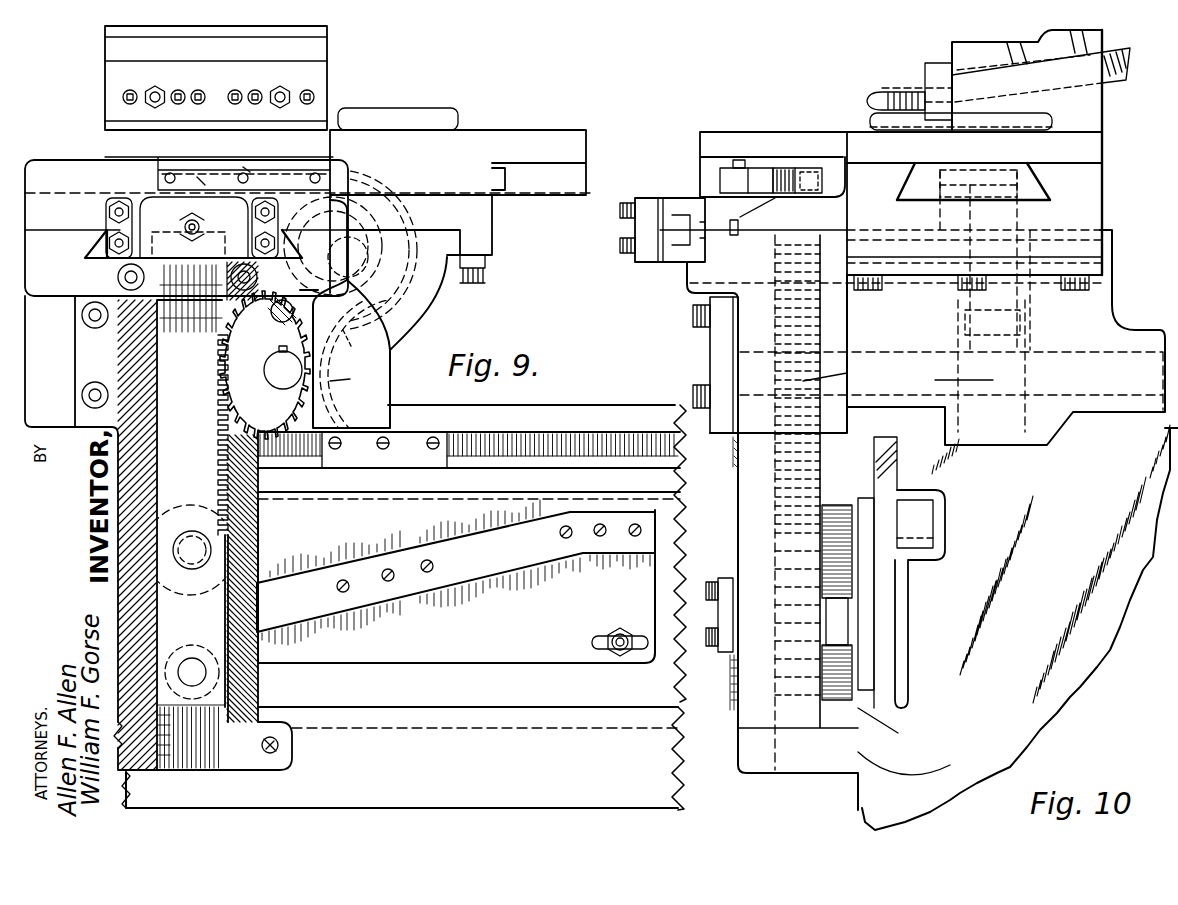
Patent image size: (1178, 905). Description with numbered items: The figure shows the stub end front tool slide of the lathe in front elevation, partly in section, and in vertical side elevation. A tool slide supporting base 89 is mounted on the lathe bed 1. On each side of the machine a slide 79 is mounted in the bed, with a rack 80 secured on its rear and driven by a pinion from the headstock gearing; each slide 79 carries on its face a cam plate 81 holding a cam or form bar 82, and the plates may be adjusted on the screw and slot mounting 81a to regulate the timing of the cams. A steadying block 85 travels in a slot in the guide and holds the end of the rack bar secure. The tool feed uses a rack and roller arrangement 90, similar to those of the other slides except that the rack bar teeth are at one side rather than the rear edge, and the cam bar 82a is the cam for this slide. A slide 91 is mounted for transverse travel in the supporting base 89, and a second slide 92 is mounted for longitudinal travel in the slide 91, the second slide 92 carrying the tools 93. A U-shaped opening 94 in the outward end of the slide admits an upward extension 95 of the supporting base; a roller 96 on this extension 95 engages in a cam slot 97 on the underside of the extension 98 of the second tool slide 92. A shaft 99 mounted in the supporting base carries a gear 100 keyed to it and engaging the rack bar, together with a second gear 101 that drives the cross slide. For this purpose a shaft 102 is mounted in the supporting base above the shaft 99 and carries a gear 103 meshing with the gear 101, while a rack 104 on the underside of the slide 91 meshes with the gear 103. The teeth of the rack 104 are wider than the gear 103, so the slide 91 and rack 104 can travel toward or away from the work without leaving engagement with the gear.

In FIG. 9, the lathe bed 1 is at (650, 697).
In FIG. 10, the lathe bed 1 is at (1058, 705).
In FIG. 9, the slide 79 is at (548, 712).
In FIG. 10, the slide 79 is at (892, 643).
In FIG. 9, the rack 80 is at (678, 522).
In FIG. 10, the rack 80 is at (936, 599).
In FIG. 9, the cam plate 81 is at (457, 652).
In FIG. 10, the cam plate 81 is at (863, 630).
In FIG. 9, the screw and slot mounting 81a is at (600, 650).
In FIG. 10, the cam or form bar 82 is at (838, 632).
In FIG. 9, the cam bar 82a is at (538, 552).
In FIG. 10, the steadying block 85 is at (720, 617).
In FIG. 9, the tool slide supporting base 89 is at (392, 385).
In FIG. 10, the tool slide supporting base 89 is at (932, 520).
In FIG. 9, the rack and roller arrangement 90 is at (260, 543).
In FIG. 9, the slide 91 is at (88, 242).
In FIG. 10, the slide 91 is at (1095, 205).
In FIG. 9, the second slide 92 is at (556, 140).
In FIG. 10, the second slide 92 is at (1077, 149).
In FIG. 9, the tools 93 is at (317, 96).
In FIG. 10, the tools 93 is at (1073, 80).
In FIG. 9, the U-shaped opening 94 is at (112, 266).
In FIG. 10, the U-shaped opening 94 is at (712, 217).
In FIG. 9, the upward extension 95 is at (157, 220).
In FIG. 10, the upward extension 95 is at (792, 213).
In FIG. 9, the roller 96 is at (197, 177).
In FIG. 10, the roller 96 is at (792, 177).
In FIG. 9, the cam slot 97 is at (247, 167).
In FIG. 10, the cam slot 97 is at (767, 177).
In FIG. 9, the extension 98 is at (118, 140).
In FIG. 10, the extension 98 is at (732, 138).
In FIG. 9, the shaft 99 is at (270, 384).
In FIG. 10, the shaft 99 is at (760, 368).
In FIG. 9, the gear 100 is at (356, 371).
In FIG. 10, the gear 100 is at (839, 375).
In FIG. 9, the second gear 101 is at (363, 340).
In FIG. 10, the second gear 101 is at (948, 381).
In FIG. 10, the shaft 102 is at (1043, 283).
In FIG. 10, the gear 103 is at (995, 220).
In FIG. 10, the rack 104 is at (995, 187).